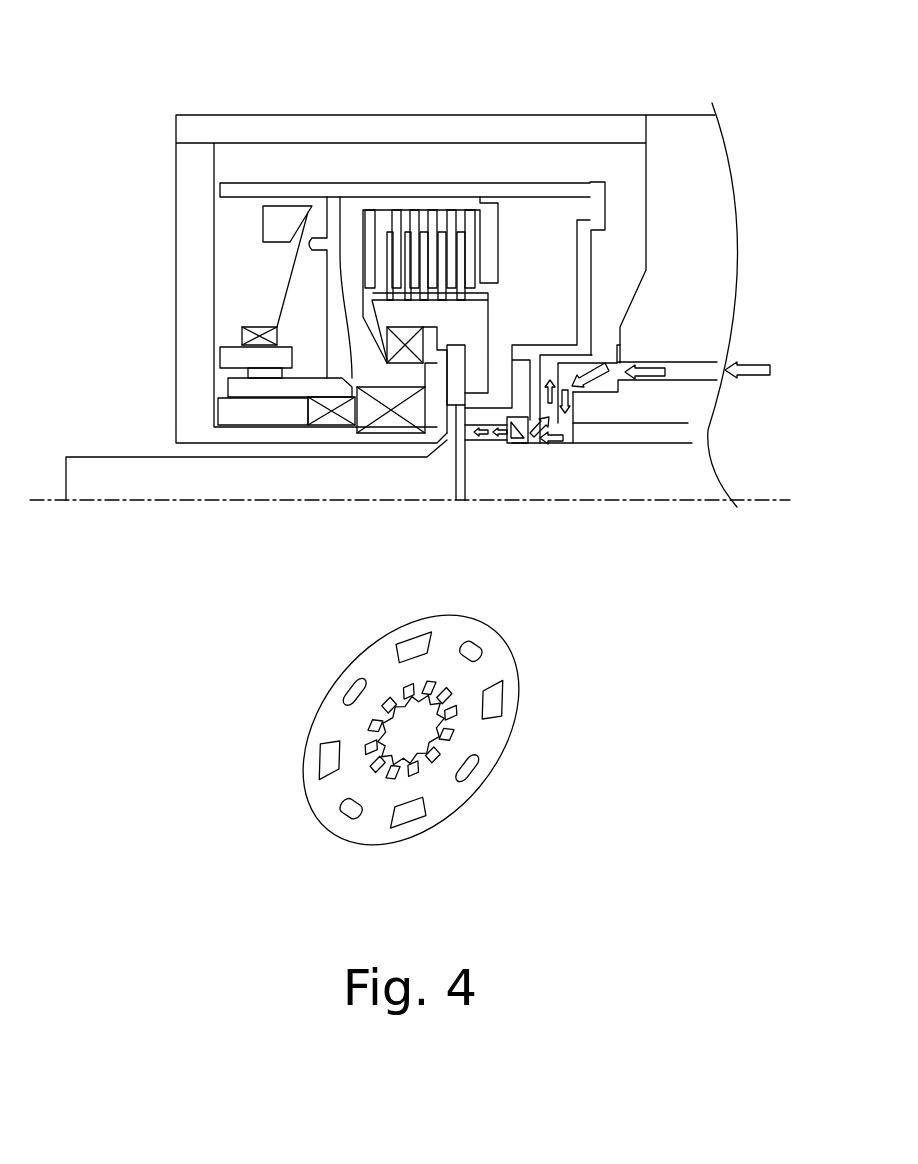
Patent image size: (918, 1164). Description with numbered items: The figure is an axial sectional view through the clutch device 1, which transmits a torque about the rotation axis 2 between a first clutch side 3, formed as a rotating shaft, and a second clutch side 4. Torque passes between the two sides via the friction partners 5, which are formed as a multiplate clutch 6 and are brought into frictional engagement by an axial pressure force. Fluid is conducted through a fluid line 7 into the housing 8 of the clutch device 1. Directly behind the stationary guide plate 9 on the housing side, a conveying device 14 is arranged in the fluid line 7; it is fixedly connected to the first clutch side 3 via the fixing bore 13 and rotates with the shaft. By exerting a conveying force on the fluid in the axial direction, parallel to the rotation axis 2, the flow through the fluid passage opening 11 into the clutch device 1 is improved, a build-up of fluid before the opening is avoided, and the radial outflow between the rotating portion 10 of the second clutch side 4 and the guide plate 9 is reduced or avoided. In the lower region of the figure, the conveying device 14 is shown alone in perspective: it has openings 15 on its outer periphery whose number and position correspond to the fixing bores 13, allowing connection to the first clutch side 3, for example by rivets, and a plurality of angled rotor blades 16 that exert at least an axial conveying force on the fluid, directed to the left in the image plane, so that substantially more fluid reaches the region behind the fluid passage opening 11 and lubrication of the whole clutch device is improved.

The clutch device 1 is at (689, 94).
The rotation axis 2 is at (770, 502).
The first clutch side 3 is at (193, 485).
The second clutch side 4 is at (573, 182).
The friction partners 5 is at (473, 247).
The multiplate clutch 6 is at (437, 213).
The fluid line 7 is at (700, 372).
The housing 8 is at (722, 218).
The guide plate 9 is at (575, 392).
The rotating portion 10 is at (590, 245).
The fluid passage opening 11 is at (507, 440).
The fixing bore 13 is at (488, 437).
The conveying device 14 is at (517, 445).
The openings 15 is at (413, 812).
The rotor blades 16 is at (437, 753).